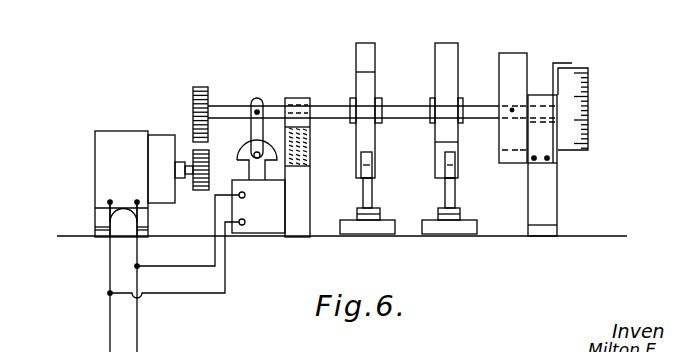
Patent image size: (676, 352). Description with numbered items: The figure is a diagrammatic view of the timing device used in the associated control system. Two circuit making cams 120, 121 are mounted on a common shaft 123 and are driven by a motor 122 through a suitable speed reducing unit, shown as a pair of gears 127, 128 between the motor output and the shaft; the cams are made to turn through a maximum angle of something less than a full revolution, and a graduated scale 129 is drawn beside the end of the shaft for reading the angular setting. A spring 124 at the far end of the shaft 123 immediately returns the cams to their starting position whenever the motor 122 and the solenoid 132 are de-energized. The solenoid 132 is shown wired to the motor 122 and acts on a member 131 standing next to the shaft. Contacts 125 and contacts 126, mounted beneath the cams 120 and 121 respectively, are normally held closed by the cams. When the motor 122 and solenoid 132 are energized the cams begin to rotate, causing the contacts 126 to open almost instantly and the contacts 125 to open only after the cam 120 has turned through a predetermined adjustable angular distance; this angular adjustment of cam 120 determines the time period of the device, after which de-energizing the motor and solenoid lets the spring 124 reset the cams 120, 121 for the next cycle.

The circuit making cam 120 is at (356, 80).
The circuit making cam 121 is at (435, 80).
The motor 122 is at (145, 241).
The common shaft 123 is at (387, 122).
The spring 124 is at (512, 53).
The contacts 125 is at (363, 206).
The contacts 126 is at (446, 206).
The gear 127 is at (193, 108).
The gear 128 is at (193, 163).
The scale 129 is at (588, 113).
The column with spring 131 is at (276, 167).
The solenoid 132 is at (258, 206).